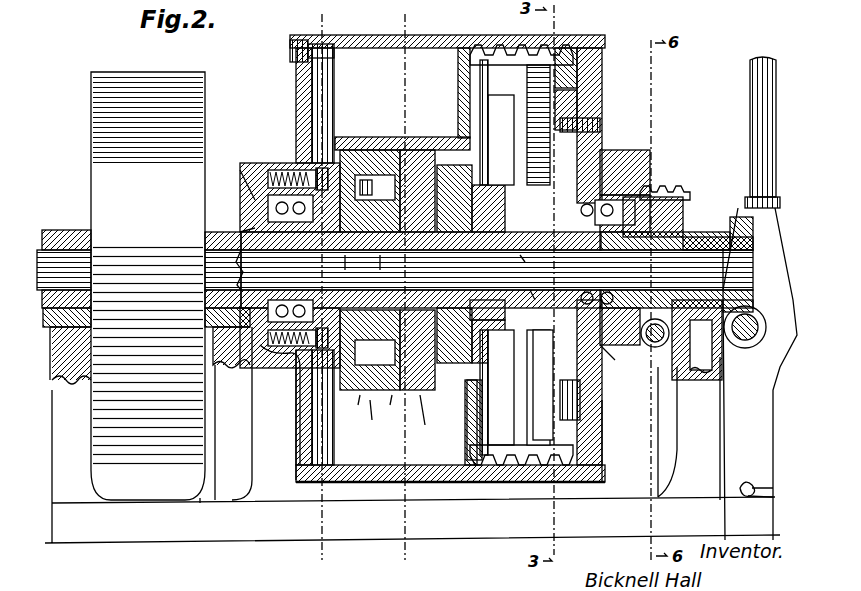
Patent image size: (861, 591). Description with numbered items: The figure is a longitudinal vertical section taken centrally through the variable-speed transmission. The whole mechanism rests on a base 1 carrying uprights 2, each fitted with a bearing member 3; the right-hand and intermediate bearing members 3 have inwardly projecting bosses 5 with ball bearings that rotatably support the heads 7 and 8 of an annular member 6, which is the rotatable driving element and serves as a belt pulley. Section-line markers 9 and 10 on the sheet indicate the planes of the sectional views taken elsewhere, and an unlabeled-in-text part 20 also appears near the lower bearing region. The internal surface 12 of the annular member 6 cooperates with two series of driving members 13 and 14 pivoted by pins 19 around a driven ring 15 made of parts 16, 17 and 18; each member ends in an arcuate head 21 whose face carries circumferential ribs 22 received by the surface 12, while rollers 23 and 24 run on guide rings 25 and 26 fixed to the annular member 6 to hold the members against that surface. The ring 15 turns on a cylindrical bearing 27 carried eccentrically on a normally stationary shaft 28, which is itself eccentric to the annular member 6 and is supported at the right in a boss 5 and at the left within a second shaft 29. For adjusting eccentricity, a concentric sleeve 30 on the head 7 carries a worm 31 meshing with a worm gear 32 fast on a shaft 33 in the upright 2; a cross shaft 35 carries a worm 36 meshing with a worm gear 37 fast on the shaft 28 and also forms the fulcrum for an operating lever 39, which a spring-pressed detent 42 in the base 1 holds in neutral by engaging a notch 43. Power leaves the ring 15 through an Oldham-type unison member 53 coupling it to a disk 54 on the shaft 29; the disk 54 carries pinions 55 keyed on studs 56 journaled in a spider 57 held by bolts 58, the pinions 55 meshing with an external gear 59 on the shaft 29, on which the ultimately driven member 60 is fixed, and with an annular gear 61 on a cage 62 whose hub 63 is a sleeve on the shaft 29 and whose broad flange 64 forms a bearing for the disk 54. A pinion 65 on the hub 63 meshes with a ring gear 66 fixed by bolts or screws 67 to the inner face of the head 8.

The base 1 is at (160, 540).
The uprights 2 is at (58, 421).
The bearing member 3 is at (55, 235).
The bosses 5 is at (650, 185).
The annular member 6 is at (440, 35).
The head member 7 is at (610, 340).
The head member 8 is at (296, 100).
The section line 9 is at (395, 11).
The section line 10 is at (313, 17).
The internal surface 12 is at (590, 55).
The driving members 13 is at (497, 257).
The driving members 14 is at (448, 412).
The ring 15 is at (539, 290).
The ring part 16 is at (485, 195).
The intermediate part 17 is at (545, 372).
The ring part 18 is at (613, 363).
The pivot pins 19 is at (600, 180).
The bearing block 20 is at (455, 365).
The head 21 is at (520, 260).
The circumferential ribs 22 is at (505, 50).
The rollers 23 is at (470, 405).
The rollers 24 is at (585, 110).
The guide ring 25 is at (470, 140).
The guide ring 26 is at (600, 130).
The cylindrical bearing 27 is at (529, 249).
The shaft 28 is at (705, 255).
The shaft 29 is at (252, 232).
The sleeve 30 is at (648, 190).
The worm 31 is at (665, 200).
The worm gear 32 is at (652, 347).
The shaft 33 is at (672, 350).
The cross shaft 35 is at (750, 336).
The worm 36 is at (755, 312).
The worm gear 37 is at (742, 200).
The operating lever 39 is at (782, 205).
The spring-pressed detent 42 is at (760, 497).
The notch 43 is at (758, 483).
The unison member 53 is at (445, 195).
The disk 54 is at (388, 175).
The pinions 55 is at (372, 200).
The studs 56 is at (412, 200).
The spider 57 is at (355, 409).
The bolts 58 is at (389, 409).
The external gear 59 is at (385, 267).
The ultimately driven member 60 is at (172, 80).
The annular gear 61 is at (369, 423).
The cage 62 is at (348, 137).
The hub 63 is at (349, 267).
The flange 64 is at (429, 420).
The pinion 65 is at (298, 365).
The ring gear 66 is at (298, 395).
The bolts or screws 67 is at (287, 165).